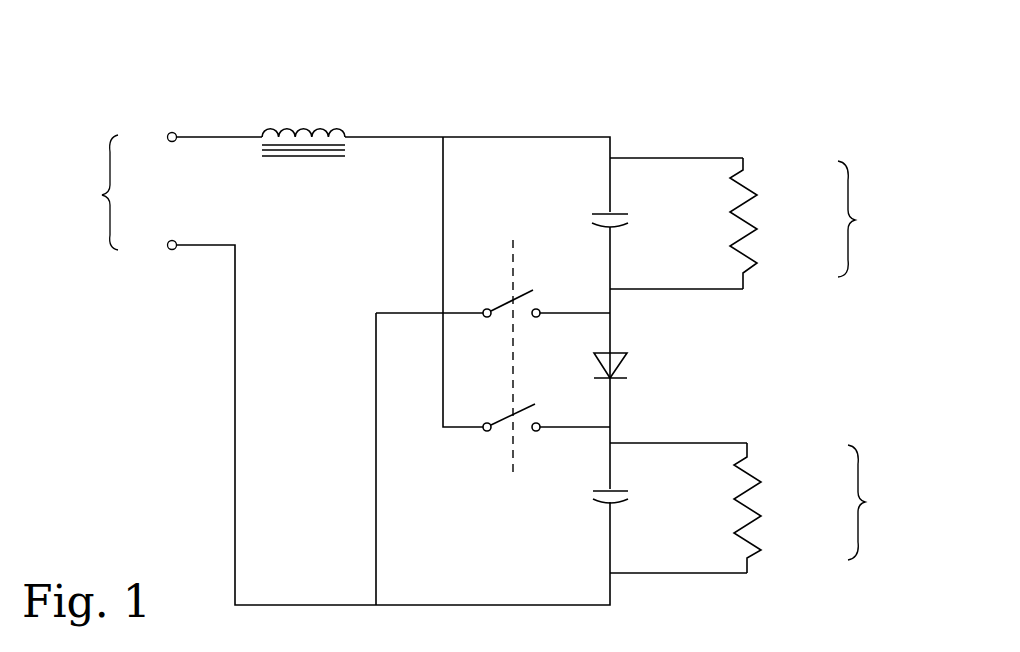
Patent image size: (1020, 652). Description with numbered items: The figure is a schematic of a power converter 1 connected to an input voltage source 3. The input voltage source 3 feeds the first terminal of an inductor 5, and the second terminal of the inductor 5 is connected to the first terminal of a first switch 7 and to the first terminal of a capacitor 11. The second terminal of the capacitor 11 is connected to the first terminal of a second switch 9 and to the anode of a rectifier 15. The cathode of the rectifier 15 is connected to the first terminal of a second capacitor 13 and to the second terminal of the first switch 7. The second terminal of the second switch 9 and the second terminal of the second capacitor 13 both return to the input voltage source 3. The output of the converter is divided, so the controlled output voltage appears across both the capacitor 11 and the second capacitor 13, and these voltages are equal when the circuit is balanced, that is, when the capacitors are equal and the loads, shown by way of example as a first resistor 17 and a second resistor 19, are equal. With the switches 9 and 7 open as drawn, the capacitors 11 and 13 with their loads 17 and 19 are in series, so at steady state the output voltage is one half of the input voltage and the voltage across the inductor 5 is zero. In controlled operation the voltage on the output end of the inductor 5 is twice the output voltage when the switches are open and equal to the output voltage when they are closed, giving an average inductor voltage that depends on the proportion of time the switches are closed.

The power converter 1 is at (223, 55).
The input voltage source 3 is at (147, 237).
The inductor 5 is at (308, 113).
The switch 7 is at (500, 433).
The switch 9 is at (547, 289).
The capacitor 11 is at (635, 197).
The second capacitor 13 is at (622, 473).
The rectifier 15 is at (628, 343).
The resistor 17 is at (752, 185).
The resistor 19 is at (765, 463).